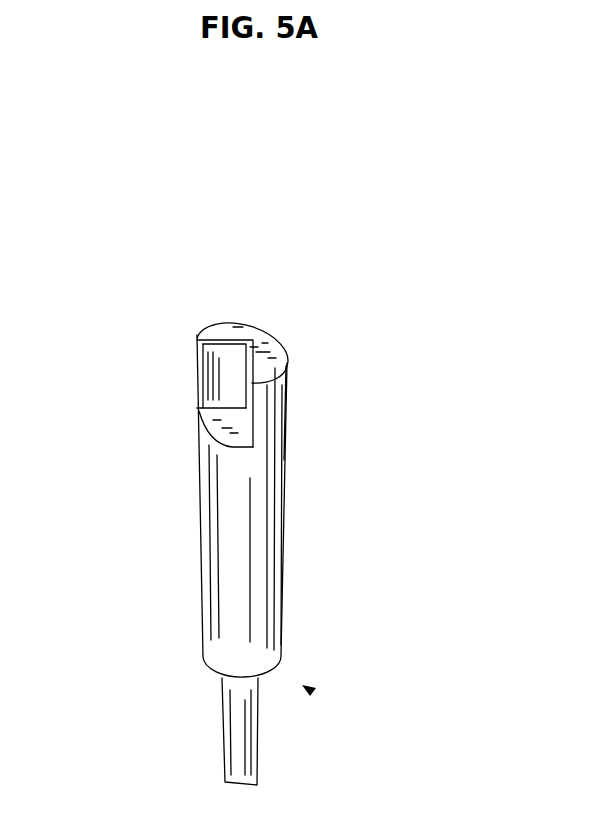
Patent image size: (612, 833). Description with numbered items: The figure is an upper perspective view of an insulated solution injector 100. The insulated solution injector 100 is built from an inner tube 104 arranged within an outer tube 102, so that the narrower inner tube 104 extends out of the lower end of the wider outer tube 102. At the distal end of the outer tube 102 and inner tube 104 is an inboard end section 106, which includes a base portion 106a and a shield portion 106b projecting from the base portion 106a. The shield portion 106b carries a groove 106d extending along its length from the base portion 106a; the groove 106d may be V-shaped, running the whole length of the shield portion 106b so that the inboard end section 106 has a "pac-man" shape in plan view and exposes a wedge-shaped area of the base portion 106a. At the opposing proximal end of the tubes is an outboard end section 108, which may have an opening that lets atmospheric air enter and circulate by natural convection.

The insulated solution injector 100 is at (260, 244).
The outer tube 102 is at (235, 542).
The inner tube 104 is at (237, 720).
The inboard end section 106 is at (306, 336).
The base portion 106a is at (199, 420).
The shield portion 106b is at (285, 401).
The groove 106d is at (213, 383).
The outboard end section 108 is at (311, 691).